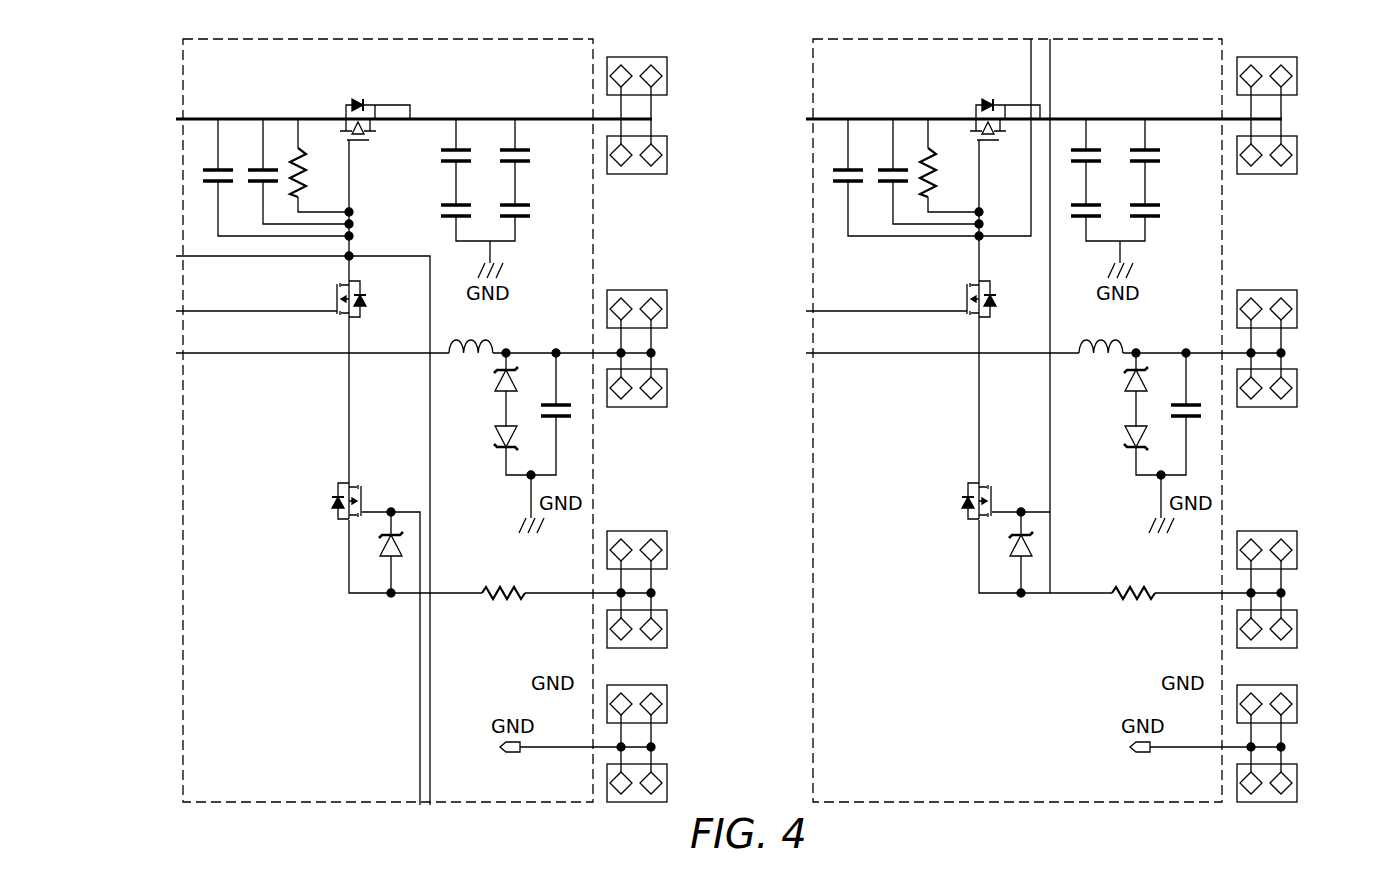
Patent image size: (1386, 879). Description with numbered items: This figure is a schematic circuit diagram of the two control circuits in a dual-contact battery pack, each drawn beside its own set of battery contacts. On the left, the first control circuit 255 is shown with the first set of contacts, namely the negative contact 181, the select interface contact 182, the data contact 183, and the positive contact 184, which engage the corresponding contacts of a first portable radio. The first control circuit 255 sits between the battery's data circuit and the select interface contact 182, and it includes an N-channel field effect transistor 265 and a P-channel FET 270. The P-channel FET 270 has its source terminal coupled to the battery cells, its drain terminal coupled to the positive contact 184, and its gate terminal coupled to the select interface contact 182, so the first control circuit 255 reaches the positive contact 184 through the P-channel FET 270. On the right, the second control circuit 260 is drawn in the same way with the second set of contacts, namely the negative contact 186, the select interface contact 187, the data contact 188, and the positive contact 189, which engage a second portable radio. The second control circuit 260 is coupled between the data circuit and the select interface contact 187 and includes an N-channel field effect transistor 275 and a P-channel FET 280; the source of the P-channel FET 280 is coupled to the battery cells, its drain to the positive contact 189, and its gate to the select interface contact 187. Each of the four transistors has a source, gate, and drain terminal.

The first control circuit 255 is at (166, 51).
The second control circuit 260 is at (796, 51).
The N-channel field effect transistor 265 is at (312, 521).
The P-channel FET 270 is at (374, 150).
The N-channel field effect transistor 275 is at (942, 521).
The P-channel FET 280 is at (1004, 150).
The negative contact 181 is at (678, 682).
The select interface contact 182 is at (678, 527).
The data contact 183 is at (678, 289).
The positive contact 184 is at (678, 94).
The negative contact 186 is at (1308, 683).
The select interface contact 187 is at (1308, 527).
The data contact 188 is at (1308, 289).
The positive contact 189 is at (1308, 94).